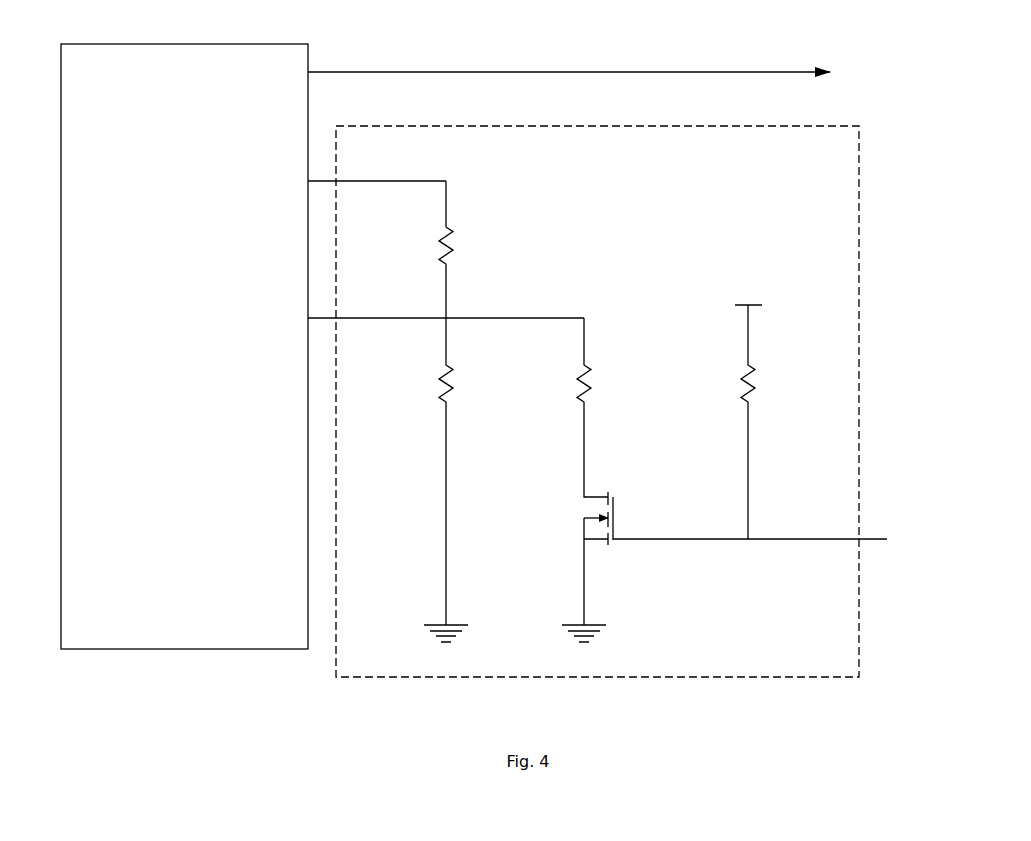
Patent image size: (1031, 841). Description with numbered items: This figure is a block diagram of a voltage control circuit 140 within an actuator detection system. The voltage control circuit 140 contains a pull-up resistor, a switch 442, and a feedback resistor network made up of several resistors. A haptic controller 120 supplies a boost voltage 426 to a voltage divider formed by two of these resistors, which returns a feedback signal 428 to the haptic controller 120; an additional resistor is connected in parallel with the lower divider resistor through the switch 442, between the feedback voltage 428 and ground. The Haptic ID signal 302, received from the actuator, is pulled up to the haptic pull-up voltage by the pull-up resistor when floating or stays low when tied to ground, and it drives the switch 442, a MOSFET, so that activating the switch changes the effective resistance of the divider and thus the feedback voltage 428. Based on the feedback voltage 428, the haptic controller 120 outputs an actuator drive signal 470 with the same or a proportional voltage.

The haptic controller 120 is at (170, 453).
The voltage control circuit 140 is at (805, 174).
The Haptic ID signal 302 is at (1009, 550).
The boost voltage 426 is at (225, 201).
The feedback signal 428 is at (225, 340).
The switch 442 is at (614, 478).
The actuator drive signal 470 is at (970, 91).